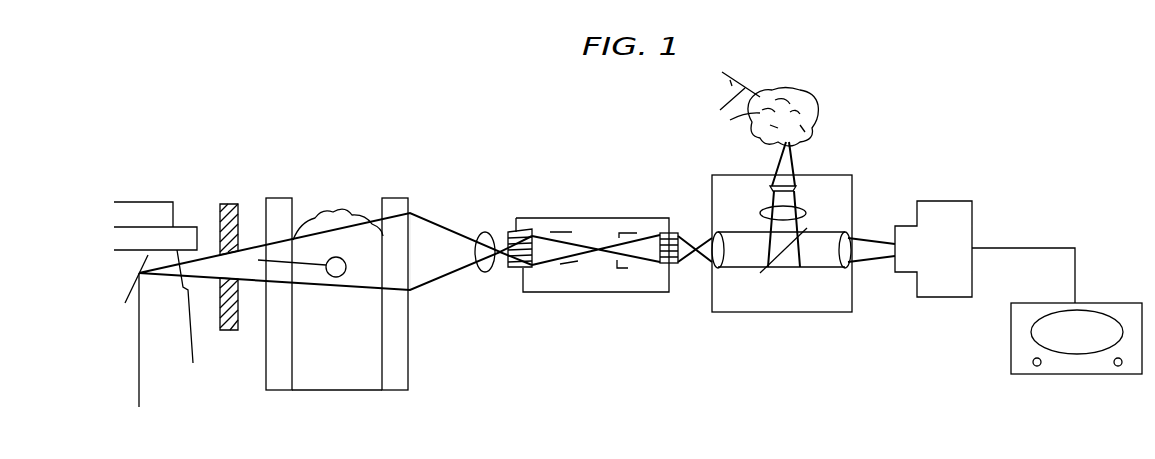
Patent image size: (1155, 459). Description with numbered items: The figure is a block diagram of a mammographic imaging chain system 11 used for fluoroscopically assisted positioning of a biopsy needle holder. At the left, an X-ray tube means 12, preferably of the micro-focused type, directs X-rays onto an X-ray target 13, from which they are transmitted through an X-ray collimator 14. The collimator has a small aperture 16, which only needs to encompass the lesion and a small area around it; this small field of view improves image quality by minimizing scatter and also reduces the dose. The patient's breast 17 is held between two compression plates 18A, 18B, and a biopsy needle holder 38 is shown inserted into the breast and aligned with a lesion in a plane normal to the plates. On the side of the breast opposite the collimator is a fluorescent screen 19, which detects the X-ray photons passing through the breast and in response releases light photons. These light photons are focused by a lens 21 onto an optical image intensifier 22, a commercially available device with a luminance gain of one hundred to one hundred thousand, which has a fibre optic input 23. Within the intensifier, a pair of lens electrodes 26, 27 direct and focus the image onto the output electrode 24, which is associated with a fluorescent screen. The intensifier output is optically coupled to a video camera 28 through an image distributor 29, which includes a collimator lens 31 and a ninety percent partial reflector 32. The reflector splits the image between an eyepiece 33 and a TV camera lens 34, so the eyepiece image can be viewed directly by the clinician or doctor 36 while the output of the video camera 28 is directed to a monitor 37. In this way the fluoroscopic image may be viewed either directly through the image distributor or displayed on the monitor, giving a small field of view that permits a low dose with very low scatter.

The mammographic imaging chain system 11 is at (985, 133).
The X-ray tube means 12 is at (137, 200).
The X-ray target 13 is at (128, 300).
The X-ray collimator 14 is at (231, 203).
The aperture 16 is at (240, 232).
The patient's breast 17 is at (343, 364).
The compression plate 18A is at (280, 378).
The compression plate 18B is at (391, 378).
The fluorescent screen 19 is at (410, 232).
The lens 21 is at (487, 232).
The optical image intensifier 22 is at (597, 218).
The fibre optic input 23 is at (513, 268).
The electrode 24 is at (673, 232).
The lens electrode 26 is at (573, 265).
The lens electrode 27 is at (622, 270).
The video camera 28 is at (972, 212).
The image distributor 29 is at (832, 177).
The collimator lens 31 is at (712, 266).
The partial reflector 32 is at (792, 267).
The eyepiece 33 is at (805, 212).
The TV camera lens 34 is at (857, 268).
The clinician or doctor 36 is at (818, 107).
The monitor 37 is at (1113, 303).
The biopsy needle holder 38 is at (310, 262).